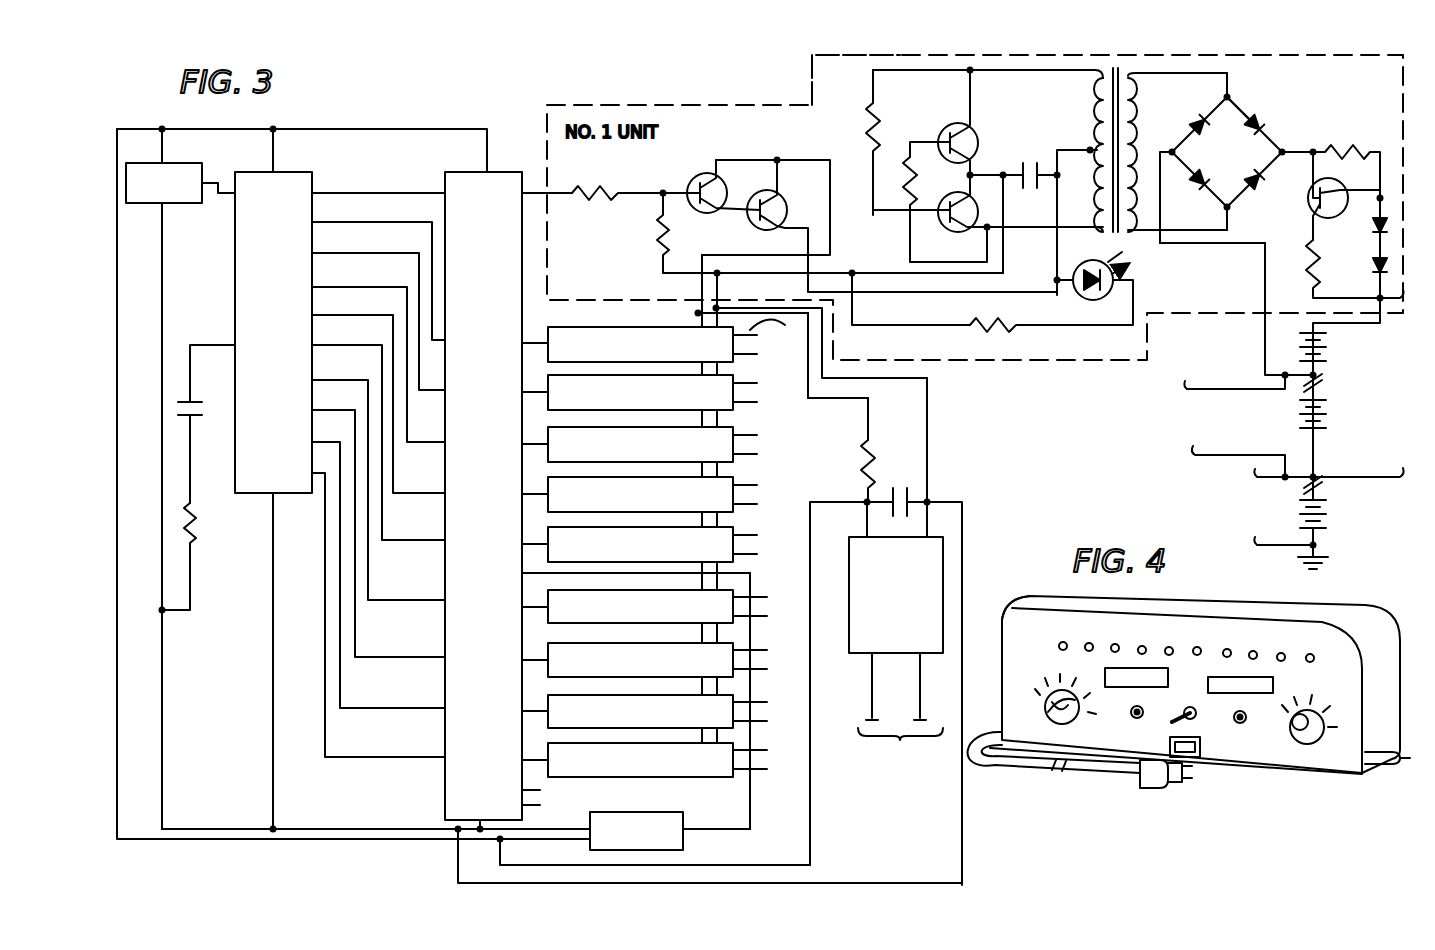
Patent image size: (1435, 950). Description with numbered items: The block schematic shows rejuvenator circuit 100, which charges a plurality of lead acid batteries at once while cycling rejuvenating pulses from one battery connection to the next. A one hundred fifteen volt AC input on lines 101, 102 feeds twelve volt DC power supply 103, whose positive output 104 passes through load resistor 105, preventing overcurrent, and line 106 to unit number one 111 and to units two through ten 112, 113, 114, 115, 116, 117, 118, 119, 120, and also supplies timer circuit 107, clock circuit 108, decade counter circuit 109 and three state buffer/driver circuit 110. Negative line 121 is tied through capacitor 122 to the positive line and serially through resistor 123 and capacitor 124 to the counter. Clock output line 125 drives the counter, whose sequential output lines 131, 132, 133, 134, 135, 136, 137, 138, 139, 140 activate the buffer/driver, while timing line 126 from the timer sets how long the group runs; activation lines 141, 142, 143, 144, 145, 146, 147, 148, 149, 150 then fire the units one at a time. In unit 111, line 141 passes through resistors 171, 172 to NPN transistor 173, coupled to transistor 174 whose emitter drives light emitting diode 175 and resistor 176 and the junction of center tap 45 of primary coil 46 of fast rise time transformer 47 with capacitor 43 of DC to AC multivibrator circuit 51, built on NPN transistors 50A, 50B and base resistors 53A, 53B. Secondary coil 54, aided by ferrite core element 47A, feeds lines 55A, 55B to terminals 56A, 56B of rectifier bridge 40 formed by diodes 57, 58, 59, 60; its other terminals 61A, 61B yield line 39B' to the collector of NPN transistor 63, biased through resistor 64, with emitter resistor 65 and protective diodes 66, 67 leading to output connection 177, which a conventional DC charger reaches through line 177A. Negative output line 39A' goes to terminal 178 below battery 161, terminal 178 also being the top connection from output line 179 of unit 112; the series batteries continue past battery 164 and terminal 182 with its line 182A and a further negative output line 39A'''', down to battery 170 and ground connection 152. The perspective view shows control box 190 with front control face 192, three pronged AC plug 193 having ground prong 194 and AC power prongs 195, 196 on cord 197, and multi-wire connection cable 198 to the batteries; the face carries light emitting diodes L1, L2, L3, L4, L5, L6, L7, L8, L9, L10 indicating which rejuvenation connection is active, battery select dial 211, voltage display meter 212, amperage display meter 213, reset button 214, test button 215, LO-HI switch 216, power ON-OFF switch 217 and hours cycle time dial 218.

In FIG. 3, the rejuvenator circuit 100 is at (700, 98).
In FIG. 3, the AC input line 101 is at (866, 703).
In FIG. 3, the AC input line 102 is at (918, 700).
In FIG. 3, the 12 volt DC power supply 103 is at (850, 658).
In FIG. 3, the positive output 104 is at (862, 530).
In FIG. 3, the load resistor 105 is at (862, 468).
In FIG. 3, the positive voltage line 106 is at (810, 398).
In FIG. 3, the timer circuit 107 is at (683, 840).
In FIG. 3, the clock circuit 108 is at (176, 166).
In FIG. 3, the decade counter circuit 109 is at (290, 173).
In FIG. 3, the three state buffer/driver circuit 110 is at (498, 172).
In FIG. 3, the No. 1 unit rejuvenating pulse circuit 111 is at (796, 104).
In FIG. 3, the No. 2 unit 112 is at (548, 345).
In FIG. 3, the No. 3 unit 113 is at (548, 394).
In FIG. 3, the No. 4 unit 114 is at (548, 446).
In FIG. 3, the No. 5 unit 115 is at (548, 496).
In FIG. 3, the No. 6 unit 116 is at (548, 546).
In FIG. 3, the No. 7 unit 117 is at (548, 609).
In FIG. 3, the No. 8 unit 118 is at (548, 662).
In FIG. 3, the No. 9 unit 119 is at (548, 714).
In FIG. 3, the No. 10 unit 120 is at (630, 777).
In FIG. 3, the negative line 121 is at (930, 408).
In FIG. 3, the capacitor 122 is at (907, 500).
In FIG. 3, the resistor 123 is at (196, 542).
In FIG. 3, the capacitor 124 is at (190, 420).
In FIG. 3, the clock output line 125 is at (216, 203).
In FIG. 3, the on-off pulse timing output line 126 is at (750, 790).
In FIG. 3, the decade counter output line 131 is at (338, 193).
In FIG. 3, the decade counter output line 132 is at (342, 230).
In FIG. 3, the decade counter output line 133 is at (360, 260).
In FIG. 3, the decade counter output line 134 is at (347, 294).
In FIG. 3, the decade counter output line 135 is at (340, 322).
In FIG. 3, the decade counter output line 136 is at (335, 352).
In FIG. 3, the decade counter output line 137 is at (325, 387).
In FIG. 3, the decade counter output line 138 is at (312, 410).
In FIG. 3, the decade counter output line 139 is at (312, 442).
In FIG. 3, the decade counter output line 140 is at (312, 473).
In FIG. 3, the output voltage activation line 141 is at (532, 190).
In FIG. 3, the output voltage activation line 142 is at (522, 337).
In FIG. 3, the output voltage activation line 143 is at (522, 388).
In FIG. 3, the output voltage activation line 144 is at (522, 440).
In FIG. 3, the output voltage activation line 145 is at (522, 492).
In FIG. 3, the output voltage activation line 146 is at (522, 542).
In FIG. 3, the output voltage activation line 147 is at (522, 604).
In FIG. 3, the output voltage activation line 148 is at (522, 658).
In FIG. 3, the output voltage activation line 149 is at (522, 709).
In FIG. 3, the output voltage activation line 150 is at (522, 762).
In FIG. 3, the ground connection 152 is at (1270, 545).
In FIG. 3, the battery 161 is at (1328, 378).
In FIG. 3, the battery 164 is at (1298, 405).
In FIG. 3, the battery 170 is at (1328, 522).
In FIG. 3, the resistor 171 is at (582, 190).
In FIG. 3, the resistor 172 is at (660, 240).
In FIG. 3, the NPN transistor 173 is at (716, 190).
In FIG. 3, the NPN transistor 174 is at (782, 200).
In FIG. 3, the light emitting diode 175 is at (1080, 296).
In FIG. 3, the resistor 176 is at (1010, 335).
In FIG. 3, the output connection 177 is at (1395, 330).
In FIG. 3, the line 177A is at (1328, 352).
In FIG. 3, the terminal 178 is at (1325, 400).
In FIG. 3, the output line 179 is at (1212, 392).
In FIG. 3, the terminal 182 is at (1305, 482).
In FIG. 3, the line 182A is at (1380, 478).
In FIG. 3, the negative output line 39A' is at (1242, 309).
In FIG. 3, the negative output line 39A'''' is at (1215, 463).
In FIG. 3, the positive output line 39B' is at (1288, 187).
In FIG. 3, the AC to DC rectifier bridge 40 is at (1262, 115).
In FIG. 3, the capacitor 43 is at (1024, 164).
In FIG. 3, the center tap 45 is at (1088, 146).
In FIG. 3, the primary coil 46 is at (1095, 92).
In FIG. 3, the transformer 47 is at (1085, 232).
In FIG. 3, the ferrite ceramic core element 47A is at (1137, 122).
In FIG. 3, the NPN transistor 50A is at (975, 135).
In FIG. 3, the NPN transistor 50B is at (952, 232).
In FIG. 3, the DC to AC inverter multivibrator circuit 51 is at (866, 208).
In FIG. 3, the resistor 53A is at (888, 115).
In FIG. 3, the resistor 53B is at (892, 150).
In FIG. 3, the secondary coil 54 is at (1137, 165).
In FIG. 3, the line 55A is at (1233, 90).
In FIG. 3, the line 55B is at (1150, 230).
In FIG. 3, the bridge terminal 56A is at (1238, 100).
In FIG. 3, the bridge terminal 56B is at (1228, 210).
In FIG. 3, the diode 57 is at (1208, 116).
In FIG. 3, the diode 58 is at (1206, 178).
In FIG. 3, the diode 59 is at (1248, 178).
In FIG. 3, the diode 60 is at (1268, 128).
In FIG. 3, the bridge terminal 61A is at (1170, 165).
In FIG. 3, the bridge terminal 61B is at (1283, 150).
In FIG. 3, the NPN transistor 63 is at (1316, 212).
In FIG. 3, the voltage bias resistor 64 is at (1358, 140).
In FIG. 3, the resistor 65 is at (1313, 283).
In FIG. 3, the diode 66 is at (1372, 230).
In FIG. 3, the diode 67 is at (1371, 272).
In FIG. 4, the control box 190 is at (1045, 600).
In FIG. 4, the front control face 192 is at (1008, 620).
In FIG. 4, the three pronged AC plug 193 is at (1150, 790).
In FIG. 4, the ground prong 194 is at (1172, 784).
In FIG. 4, the AC power prong 195 is at (1188, 770).
In FIG. 4, the AC power prong 196 is at (1188, 782).
In FIG. 4, the cord 197 is at (1092, 778).
In FIG. 4, the multi-wire connection cable 198 is at (1392, 766).
In FIG. 4, the battery select dial 211 is at (1050, 722).
In FIG. 4, the voltage display meter 212 is at (1122, 683).
In FIG. 4, the amperage display meter 213 is at (1262, 693).
In FIG. 4, the reset button 214 is at (1137, 720).
In FIG. 4, the test button 215 is at (1245, 725).
In FIG. 4, the LO-HI switch 216 is at (1200, 718).
In FIG. 4, the power ON-OFF switch 217 is at (1200, 757).
In FIG. 4, the hours cycle time dial 218 is at (1325, 740).
In FIG. 4, the light emitting diode display L1 is at (1059, 645).
In FIG. 4, the light emitting diode display L2 is at (1086, 651).
In FIG. 4, the light emitting diode display L3 is at (1112, 645).
In FIG. 4, the light emitting diode display L4 is at (1148, 633).
In FIG. 4, the light emitting diode display L5 is at (1170, 647).
In FIG. 4, the light emitting diode display L6 is at (1197, 647).
In FIG. 4, the light emitting diode display L7 is at (1226, 649).
In FIG. 4, the light emitting diode display L8 is at (1255, 651).
In FIG. 4, the light emitting diode display L9 is at (1284, 661).
In FIG. 4, the light emitting diode display L10 is at (1325, 648).